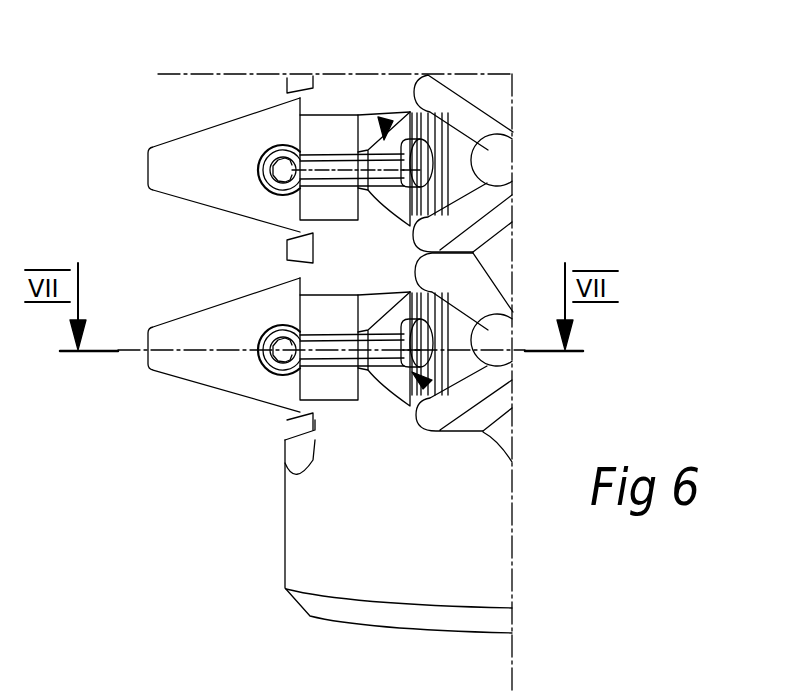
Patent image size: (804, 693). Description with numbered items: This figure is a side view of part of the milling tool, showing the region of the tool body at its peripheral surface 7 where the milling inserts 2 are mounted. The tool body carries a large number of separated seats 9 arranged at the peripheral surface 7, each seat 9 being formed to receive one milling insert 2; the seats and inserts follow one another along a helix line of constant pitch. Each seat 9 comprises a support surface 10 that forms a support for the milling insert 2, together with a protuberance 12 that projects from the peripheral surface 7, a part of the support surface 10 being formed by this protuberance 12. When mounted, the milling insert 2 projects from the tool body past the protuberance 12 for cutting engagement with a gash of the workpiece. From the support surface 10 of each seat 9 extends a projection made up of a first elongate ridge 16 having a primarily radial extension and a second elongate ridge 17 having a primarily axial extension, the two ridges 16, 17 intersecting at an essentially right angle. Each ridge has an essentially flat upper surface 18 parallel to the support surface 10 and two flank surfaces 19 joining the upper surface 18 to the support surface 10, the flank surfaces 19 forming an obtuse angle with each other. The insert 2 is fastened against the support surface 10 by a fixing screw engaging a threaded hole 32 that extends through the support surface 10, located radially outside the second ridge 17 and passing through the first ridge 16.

The milling insert 2 is at (202, 375).
The peripheral surface 7 is at (318, 540).
The seat 9 is at (384, 118).
The support surface 10 is at (390, 373).
The protuberance 12 is at (318, 140).
The first elongate ridge 16 is at (372, 157).
The second elongate ridge 17 is at (447, 160).
The upper surface 18 is at (415, 158).
The flank surfaces 19 is at (393, 162).
The threaded hole 32 is at (413, 171).